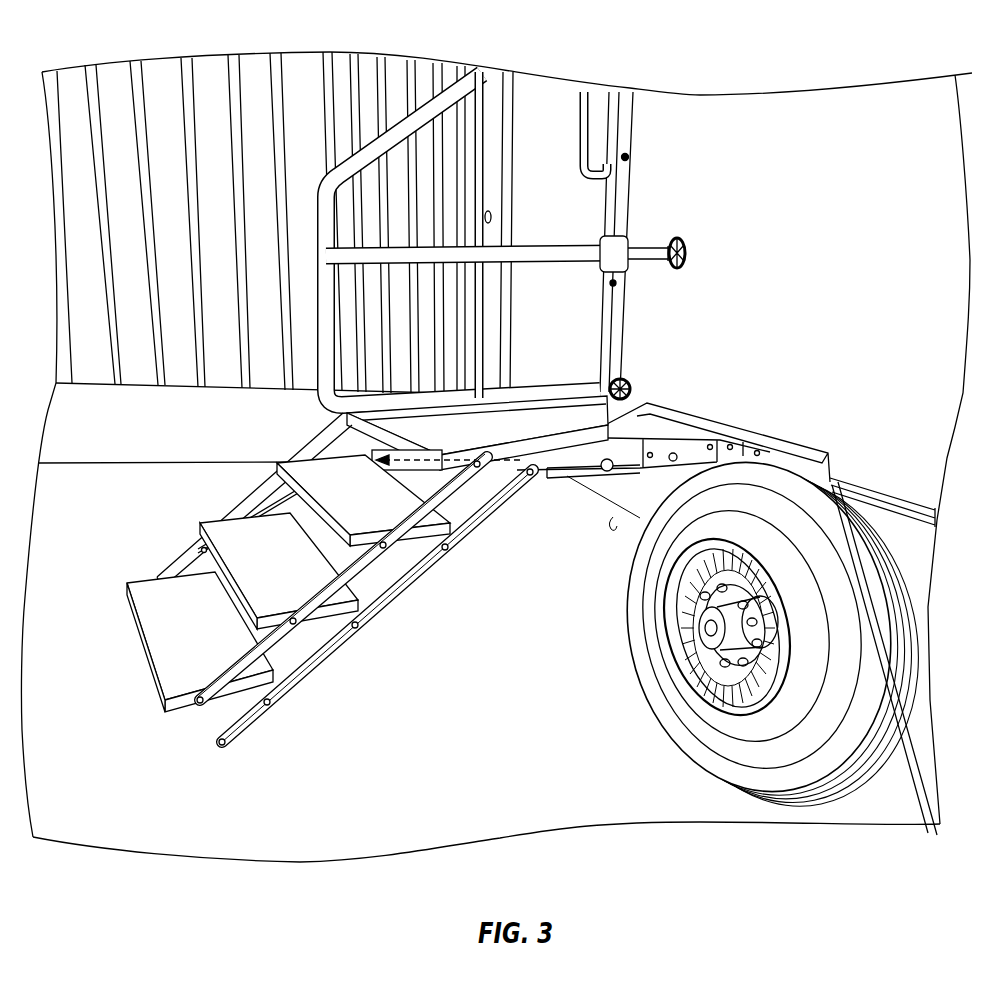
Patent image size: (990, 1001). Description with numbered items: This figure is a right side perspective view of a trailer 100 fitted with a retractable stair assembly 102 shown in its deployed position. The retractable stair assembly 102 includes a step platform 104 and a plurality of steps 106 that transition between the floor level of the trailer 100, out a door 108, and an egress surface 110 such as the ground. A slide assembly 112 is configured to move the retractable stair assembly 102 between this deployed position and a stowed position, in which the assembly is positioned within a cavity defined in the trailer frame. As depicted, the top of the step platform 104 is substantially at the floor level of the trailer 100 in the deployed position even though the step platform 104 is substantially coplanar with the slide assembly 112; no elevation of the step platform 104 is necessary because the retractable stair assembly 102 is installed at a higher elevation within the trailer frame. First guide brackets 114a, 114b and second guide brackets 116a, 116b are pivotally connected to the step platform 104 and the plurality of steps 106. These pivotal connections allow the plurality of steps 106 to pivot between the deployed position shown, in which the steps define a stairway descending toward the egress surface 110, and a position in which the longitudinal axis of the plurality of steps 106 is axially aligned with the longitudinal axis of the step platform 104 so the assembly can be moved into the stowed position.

The trailer 100 is at (805, 108).
The retractable stair assembly 102 is at (365, 586).
The step platform 104 is at (492, 437).
The plurality of steps 106 is at (380, 513).
The door 108 is at (543, 90).
The egress surface 110 is at (102, 702).
The slide assembly 112 is at (610, 486).
The first guide bracket 114a is at (276, 640).
The first guide bracket 114b is at (243, 512).
The second guide bracket 116a is at (257, 724).
The second guide bracket 116b is at (201, 549).